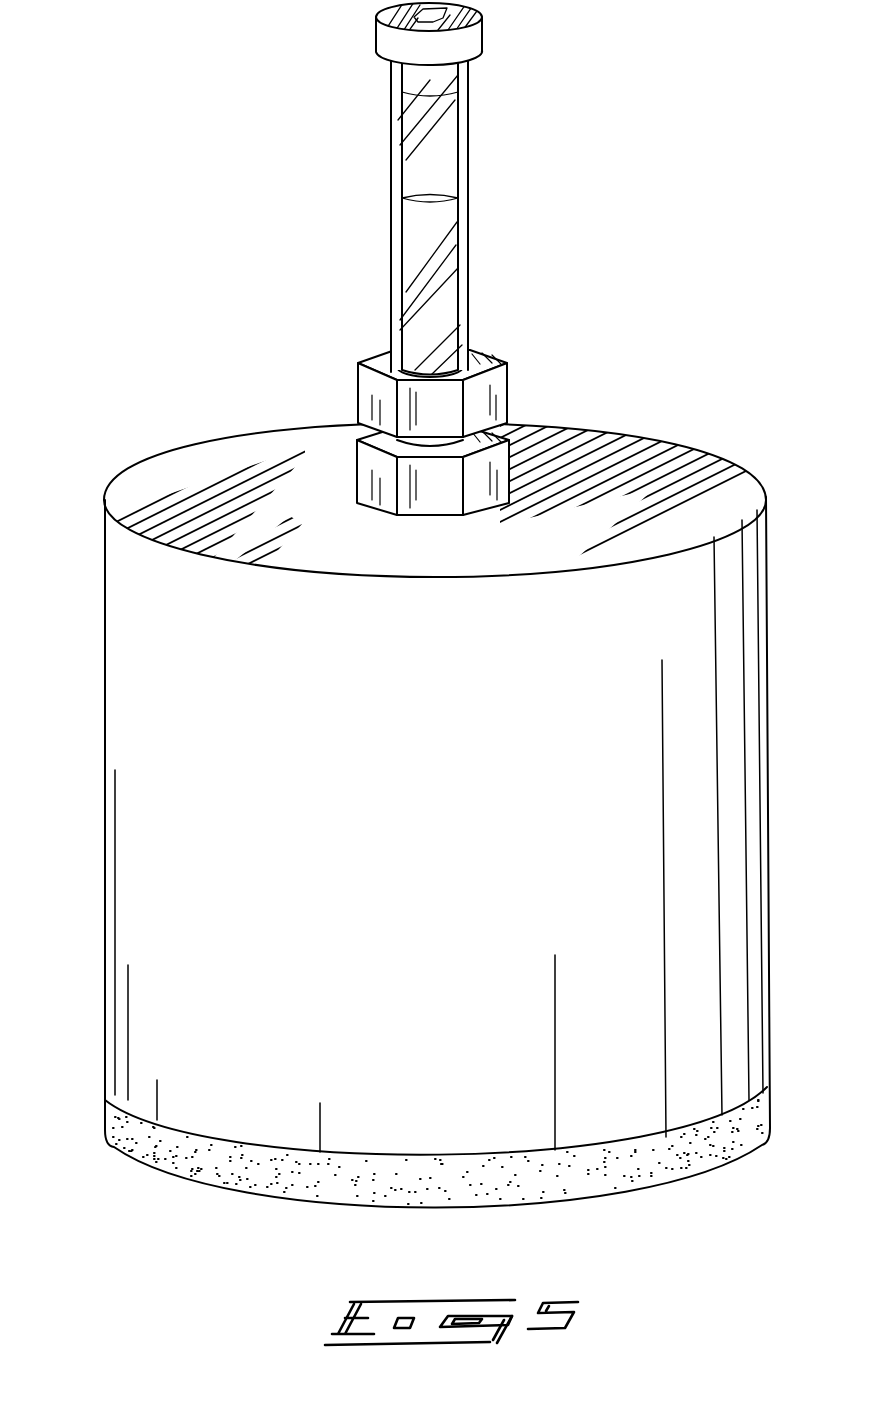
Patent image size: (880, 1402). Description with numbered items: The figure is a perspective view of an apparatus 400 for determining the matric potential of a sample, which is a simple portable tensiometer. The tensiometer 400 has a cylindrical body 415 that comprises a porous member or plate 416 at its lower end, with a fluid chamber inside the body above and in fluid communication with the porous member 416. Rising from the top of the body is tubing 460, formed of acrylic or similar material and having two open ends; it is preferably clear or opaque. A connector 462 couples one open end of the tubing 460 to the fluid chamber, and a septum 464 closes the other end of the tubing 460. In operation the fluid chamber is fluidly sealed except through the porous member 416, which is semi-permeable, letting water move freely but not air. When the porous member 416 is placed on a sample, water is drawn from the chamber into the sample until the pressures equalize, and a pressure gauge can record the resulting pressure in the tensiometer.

The apparatus 400 is at (111, 270).
The body 415 is at (375, 845).
The porous member 416 is at (630, 1170).
The tubing 460 is at (437, 152).
The connector 462 is at (370, 392).
The septum 464 is at (398, 38).